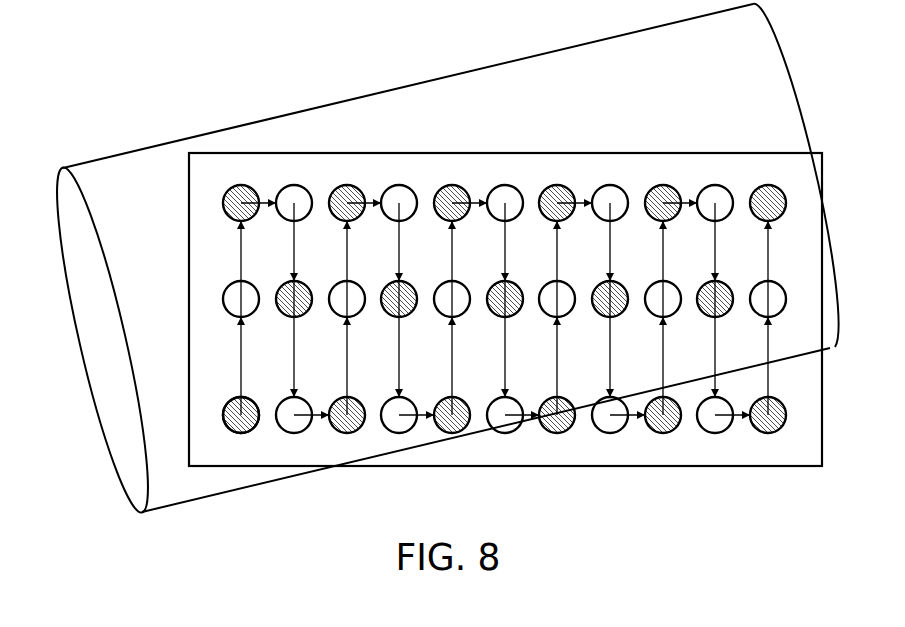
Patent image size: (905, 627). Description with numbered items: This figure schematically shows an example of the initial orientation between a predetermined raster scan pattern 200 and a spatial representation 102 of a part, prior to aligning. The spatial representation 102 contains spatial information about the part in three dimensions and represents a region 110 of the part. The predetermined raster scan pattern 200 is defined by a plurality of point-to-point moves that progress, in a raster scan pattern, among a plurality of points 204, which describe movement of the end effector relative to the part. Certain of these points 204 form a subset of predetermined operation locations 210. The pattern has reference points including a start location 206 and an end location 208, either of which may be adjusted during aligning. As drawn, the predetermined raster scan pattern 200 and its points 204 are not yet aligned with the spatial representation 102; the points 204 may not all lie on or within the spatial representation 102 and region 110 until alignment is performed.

The spatial representation 102 is at (430, 80).
The region 110 is at (151, 167).
The predetermined raster scan pattern 200 is at (229, 258).
The points 204 is at (230, 389).
The start location 206 is at (243, 436).
The end location 208 is at (767, 184).
The predetermined operation locations 210 is at (310, 309).